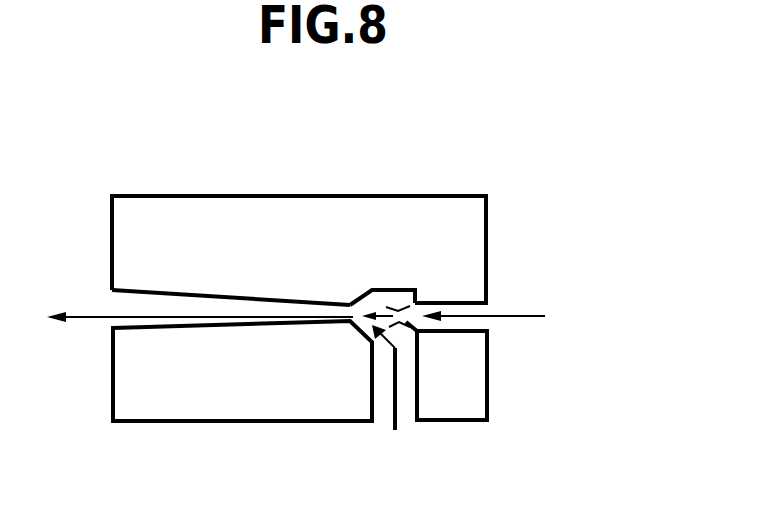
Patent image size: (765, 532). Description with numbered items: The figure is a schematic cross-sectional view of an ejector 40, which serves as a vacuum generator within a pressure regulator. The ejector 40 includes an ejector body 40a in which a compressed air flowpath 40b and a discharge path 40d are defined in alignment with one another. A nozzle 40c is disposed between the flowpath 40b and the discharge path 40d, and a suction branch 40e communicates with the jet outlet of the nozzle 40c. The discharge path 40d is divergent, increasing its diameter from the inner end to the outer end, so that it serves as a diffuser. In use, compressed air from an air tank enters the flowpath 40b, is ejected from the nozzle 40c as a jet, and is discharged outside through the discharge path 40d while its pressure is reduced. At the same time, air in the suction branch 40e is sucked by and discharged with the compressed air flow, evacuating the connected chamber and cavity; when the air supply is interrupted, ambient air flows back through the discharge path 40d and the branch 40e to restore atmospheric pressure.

The ejector 40 is at (203, 436).
The ejector body 40a is at (464, 217).
The compressed air flowpath 40b is at (453, 324).
The nozzle 40c is at (387, 298).
The discharge path 40d is at (190, 302).
The suction branch 40e is at (380, 372).